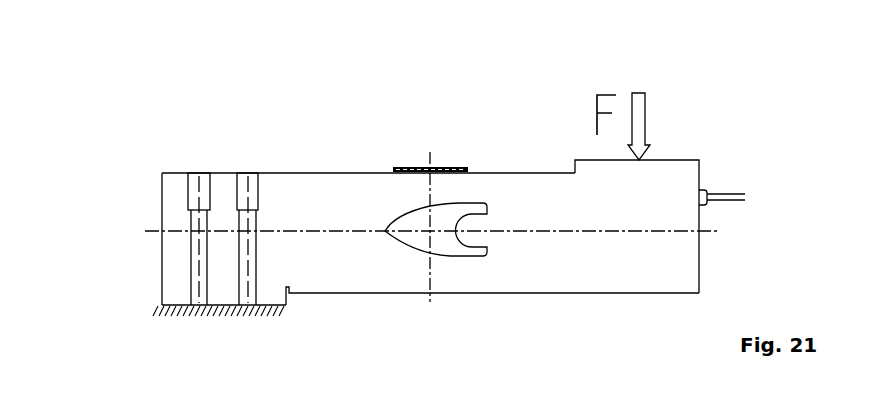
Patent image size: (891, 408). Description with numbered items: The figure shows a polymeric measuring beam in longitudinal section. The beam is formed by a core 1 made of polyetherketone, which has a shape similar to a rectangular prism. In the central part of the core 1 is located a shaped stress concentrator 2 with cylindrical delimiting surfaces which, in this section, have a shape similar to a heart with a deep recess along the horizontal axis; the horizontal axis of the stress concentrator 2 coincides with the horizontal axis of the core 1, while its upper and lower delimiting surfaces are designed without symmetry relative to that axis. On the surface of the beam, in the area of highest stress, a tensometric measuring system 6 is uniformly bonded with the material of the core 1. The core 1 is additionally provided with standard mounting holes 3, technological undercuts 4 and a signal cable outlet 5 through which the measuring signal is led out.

The core 1 is at (170, 289).
The stress concentrator 2 is at (445, 255).
The mounting holes 3 is at (195, 272).
The technological undercuts 4 is at (573, 172).
The signal cable outlet 5 is at (745, 195).
The tensometric measuring system 6 is at (397, 168).